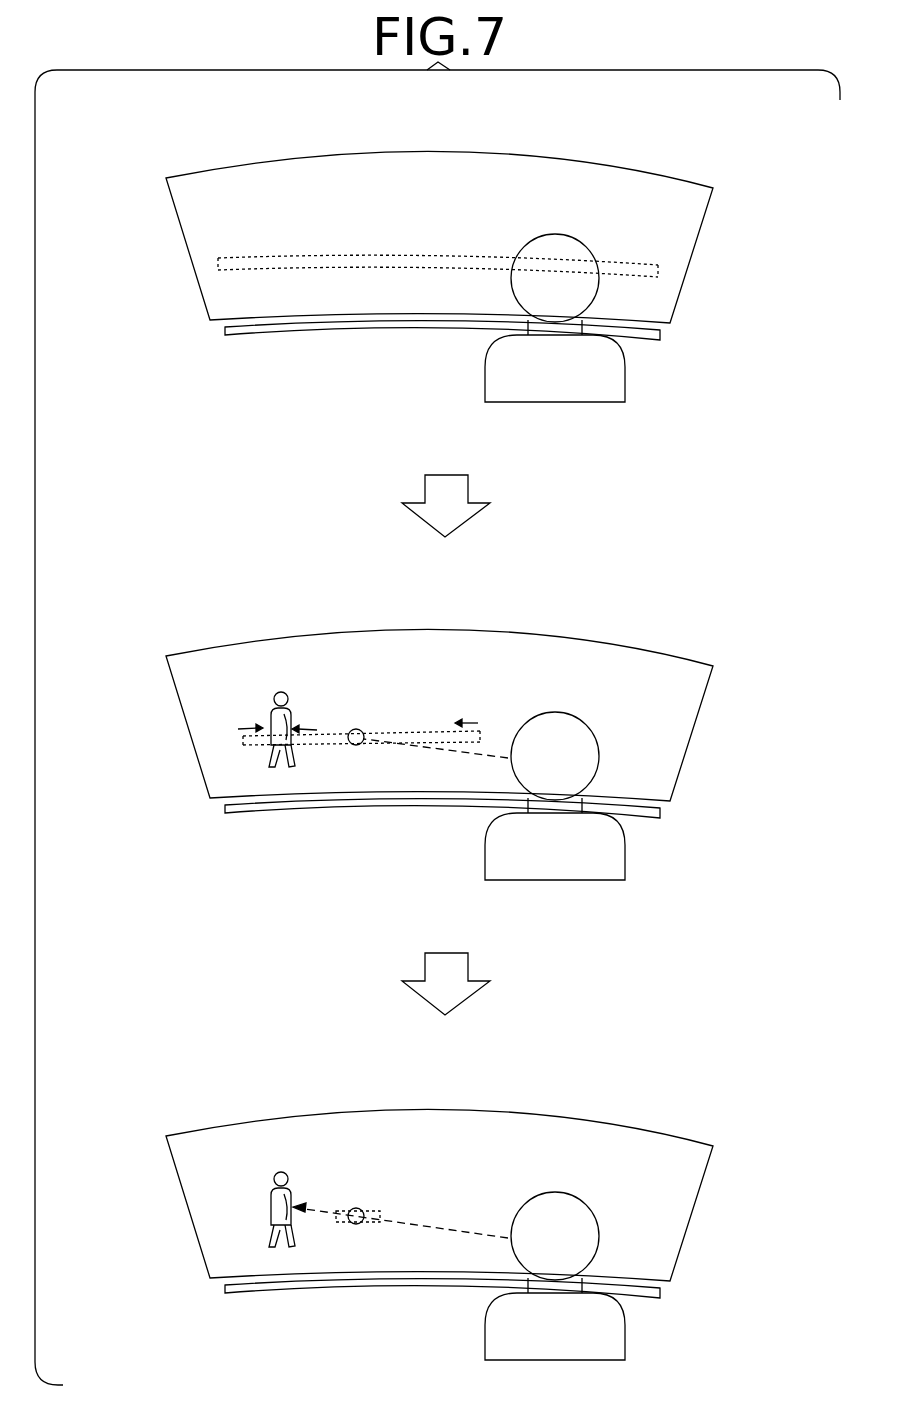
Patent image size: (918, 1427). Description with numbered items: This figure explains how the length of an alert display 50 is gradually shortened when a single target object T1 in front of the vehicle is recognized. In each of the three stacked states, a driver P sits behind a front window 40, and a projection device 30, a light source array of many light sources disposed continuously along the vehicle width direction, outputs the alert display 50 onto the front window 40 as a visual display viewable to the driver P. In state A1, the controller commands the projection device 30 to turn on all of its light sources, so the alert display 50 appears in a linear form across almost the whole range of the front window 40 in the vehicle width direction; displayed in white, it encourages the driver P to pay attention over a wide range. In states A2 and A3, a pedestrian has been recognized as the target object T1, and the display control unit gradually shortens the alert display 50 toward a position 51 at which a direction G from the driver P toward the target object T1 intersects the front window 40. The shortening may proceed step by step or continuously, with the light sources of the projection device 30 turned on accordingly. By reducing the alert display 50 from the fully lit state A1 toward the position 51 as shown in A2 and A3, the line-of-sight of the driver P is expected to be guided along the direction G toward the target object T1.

The front window 40 is at (599, 177).
The projection device 30 is at (660, 334).
The alert display 50 is at (486, 258).
The position 51 is at (352, 730).
The driver P is at (594, 252).
The target object T1 is at (273, 702).
The direction G is at (457, 754).
The state A1 is at (713, 130).
The state A2 is at (713, 608).
The state A3 is at (713, 1087).